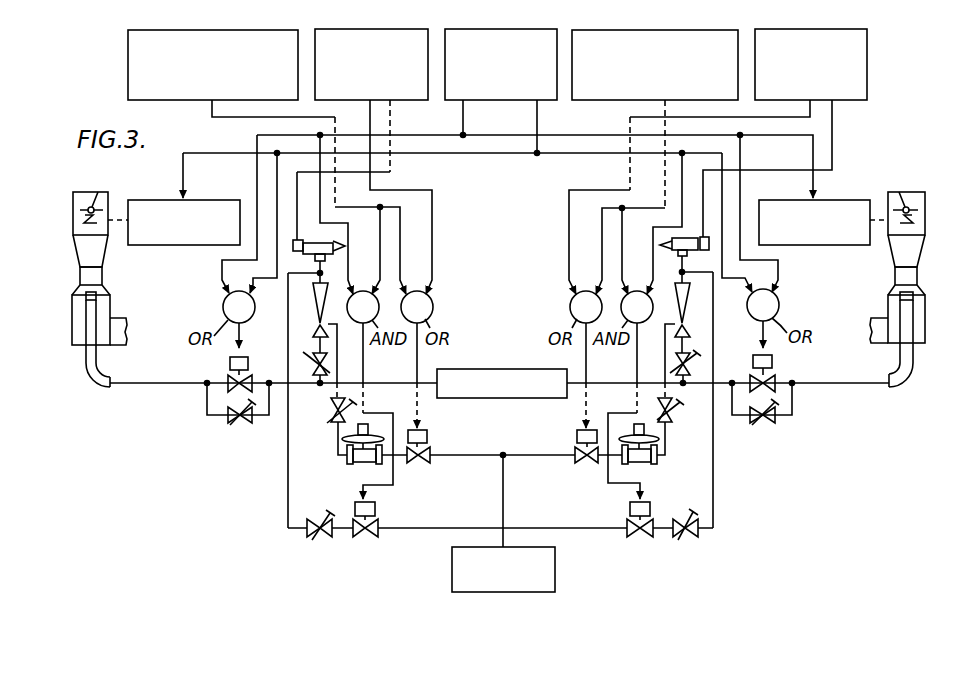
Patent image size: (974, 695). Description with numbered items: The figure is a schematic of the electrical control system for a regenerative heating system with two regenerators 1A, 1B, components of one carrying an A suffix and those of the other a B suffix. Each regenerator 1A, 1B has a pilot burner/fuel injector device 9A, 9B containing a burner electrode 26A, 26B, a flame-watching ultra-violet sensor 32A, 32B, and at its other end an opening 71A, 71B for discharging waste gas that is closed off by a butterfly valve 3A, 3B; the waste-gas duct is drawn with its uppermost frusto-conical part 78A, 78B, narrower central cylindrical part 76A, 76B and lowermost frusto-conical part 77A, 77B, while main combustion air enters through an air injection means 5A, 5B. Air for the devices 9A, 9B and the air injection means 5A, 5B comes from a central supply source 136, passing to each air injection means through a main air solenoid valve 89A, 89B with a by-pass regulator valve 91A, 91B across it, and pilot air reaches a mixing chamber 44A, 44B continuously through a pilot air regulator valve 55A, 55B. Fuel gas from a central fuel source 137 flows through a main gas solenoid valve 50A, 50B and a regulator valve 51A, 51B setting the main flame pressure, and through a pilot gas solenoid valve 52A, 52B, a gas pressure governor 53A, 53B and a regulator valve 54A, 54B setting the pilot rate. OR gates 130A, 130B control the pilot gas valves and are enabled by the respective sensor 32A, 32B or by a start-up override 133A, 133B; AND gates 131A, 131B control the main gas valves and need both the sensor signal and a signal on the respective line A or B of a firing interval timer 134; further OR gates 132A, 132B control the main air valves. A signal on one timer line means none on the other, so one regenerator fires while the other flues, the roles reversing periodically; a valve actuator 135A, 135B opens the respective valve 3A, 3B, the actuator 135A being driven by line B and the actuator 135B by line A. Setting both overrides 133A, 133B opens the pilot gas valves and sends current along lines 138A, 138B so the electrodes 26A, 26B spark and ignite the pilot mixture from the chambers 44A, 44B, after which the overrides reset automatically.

The regenerator 1A is at (72, 305).
The regenerator 1B is at (925, 321).
The butterfly-type valve 3A is at (97, 182).
The butterfly-type valve 3B is at (912, 193).
The air injection means 5A is at (85, 367).
The air injection means 5B is at (913, 365).
The pilot burner/fuel injector device 9A is at (325, 258).
The pilot burner/fuel injector device 9B is at (677, 254).
The burner electrode 26A is at (293, 240).
The burner electrode 26B is at (705, 238).
The ultra-violet sensor 32A is at (155, 100).
The ultra-violet sensor 32B is at (623, 100).
The chamber 44A is at (320, 305).
The chamber 44B is at (686, 304).
The main gas solenoid valve 50A is at (375, 508).
The main gas solenoid valve 50B is at (630, 508).
The regulator valve 51A is at (322, 539).
The regulator valve 51B is at (687, 540).
The pilot gas solenoid valve 52A is at (427, 437).
The pilot gas solenoid valve 52B is at (577, 437).
The gas pressure governor 53A is at (347, 463).
The gas pressure governor 53B is at (652, 463).
The regulator valve 54A is at (326, 419).
The regulator valve 54B is at (672, 422).
The pilot air regulator valve 55A is at (313, 376).
The pilot air regulator valve 55B is at (678, 372).
The opening 71A is at (84, 183).
The opening 71B is at (897, 192).
The central cylindrical part 76A is at (80, 276).
The central cylindrical part 76B is at (917, 276).
The lowermost frusto-conical part 77A is at (77, 292).
The lowermost frusto-conical part 77B is at (920, 292).
The uppermost frusto-conical part 78A is at (73, 250).
The uppermost frusto-conical part 78B is at (925, 248).
The main air solenoid valve 89A is at (230, 362).
The main air solenoid valve 89B is at (774, 362).
The regulator valve 91A is at (243, 425).
The regulator valve 91B is at (768, 426).
The OR gate 130A is at (429, 296).
The OR gate 130B is at (574, 296).
The AND gate 131A is at (355, 318).
The AND gate 131B is at (649, 318).
The OR gate 132A is at (223, 308).
The OR gate 132B is at (779, 303).
The start-up override 133A is at (398, 100).
The start-up override 133B is at (847, 100).
The firing interval timer 134 is at (545, 100).
The valve actuator 135A is at (178, 200).
The valve actuator 135B is at (867, 200).
The central supply source 136 is at (492, 370).
The central fuel source 137 is at (452, 551).
The line 138A is at (390, 172).
The line 138B is at (832, 170).
The timer line A is at (463, 120).
The timer line B is at (537, 120).